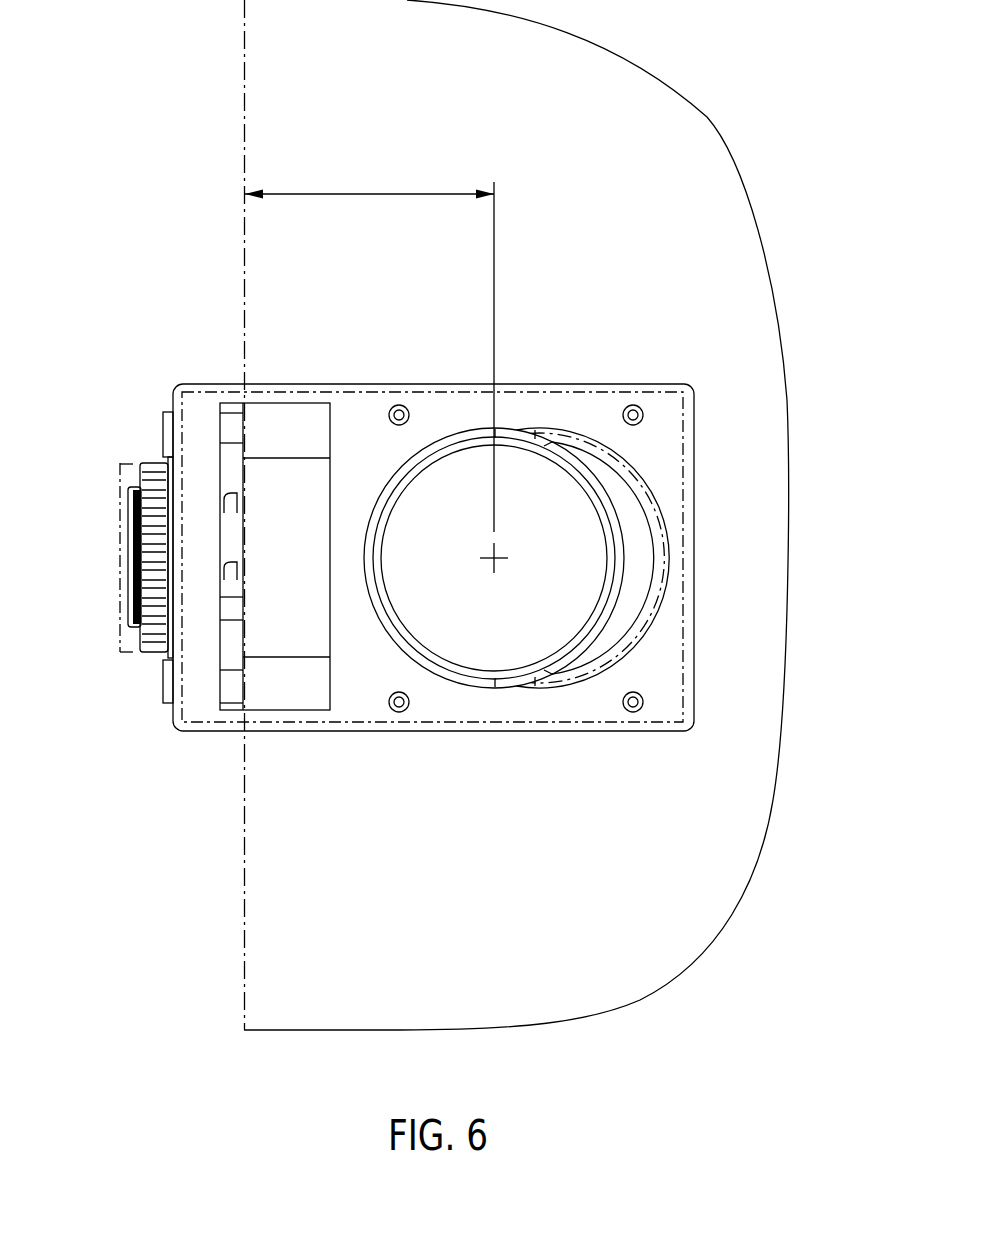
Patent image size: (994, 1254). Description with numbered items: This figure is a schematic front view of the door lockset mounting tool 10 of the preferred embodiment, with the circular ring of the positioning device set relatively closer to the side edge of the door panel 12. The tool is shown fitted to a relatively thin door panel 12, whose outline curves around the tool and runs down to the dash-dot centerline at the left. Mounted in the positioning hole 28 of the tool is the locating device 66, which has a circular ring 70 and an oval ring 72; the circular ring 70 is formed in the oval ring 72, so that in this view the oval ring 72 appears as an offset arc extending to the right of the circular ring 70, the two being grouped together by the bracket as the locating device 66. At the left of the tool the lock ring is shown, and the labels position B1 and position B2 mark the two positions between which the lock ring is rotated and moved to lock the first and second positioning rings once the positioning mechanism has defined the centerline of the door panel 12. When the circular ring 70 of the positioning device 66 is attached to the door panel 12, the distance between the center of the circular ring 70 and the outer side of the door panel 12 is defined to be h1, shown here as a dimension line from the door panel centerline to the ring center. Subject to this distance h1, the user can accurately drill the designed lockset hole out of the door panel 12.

The door lockset mounting tool 10 is at (632, 346).
The door panel 12 is at (282, 920).
The positioning hole 28 is at (633, 471).
The locating device 66 is at (630, 607).
The circular ring 70 is at (537, 667).
The oval ring 72 is at (627, 633).
The position B1 is at (127, 473).
The position B2 is at (157, 460).
The distance h1 is at (369, 345).